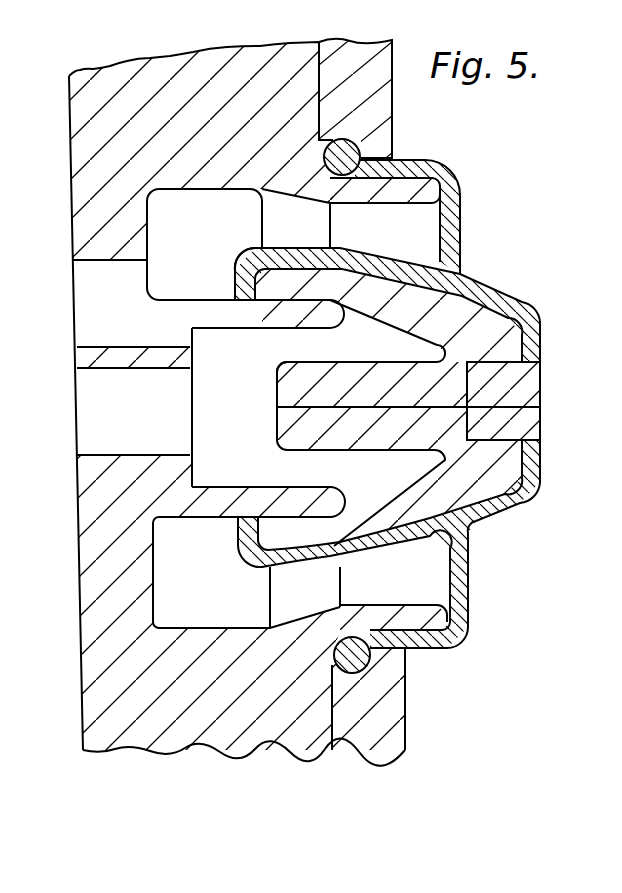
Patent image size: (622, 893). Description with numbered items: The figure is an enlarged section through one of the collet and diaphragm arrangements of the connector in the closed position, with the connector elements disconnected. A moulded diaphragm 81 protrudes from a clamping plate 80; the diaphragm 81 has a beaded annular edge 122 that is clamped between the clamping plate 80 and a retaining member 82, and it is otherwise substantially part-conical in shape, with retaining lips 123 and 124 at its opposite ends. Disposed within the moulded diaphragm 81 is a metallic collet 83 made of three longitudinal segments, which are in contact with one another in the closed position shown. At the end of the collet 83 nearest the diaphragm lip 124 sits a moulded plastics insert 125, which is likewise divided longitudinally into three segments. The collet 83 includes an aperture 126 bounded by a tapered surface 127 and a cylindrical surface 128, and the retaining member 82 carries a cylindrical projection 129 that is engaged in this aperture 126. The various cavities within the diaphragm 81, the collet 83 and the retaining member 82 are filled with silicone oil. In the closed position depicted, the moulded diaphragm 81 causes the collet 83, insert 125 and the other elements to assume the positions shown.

The clamping plate 80 is at (383, 121).
The moulded diaphragm 81 is at (527, 302).
The retaining member 82 is at (87, 175).
The three segment collet 83 is at (477, 318).
The beaded annular edge 122 is at (363, 157).
The retaining lip 123 is at (531, 328).
The retaining lip 124 is at (238, 280).
The moulded plastics insert 125 is at (531, 378).
The aperture 126 is at (272, 338).
The tapered surface 127 is at (388, 327).
The cylindrical surface 128 is at (290, 364).
The cylindrical projection 129 is at (249, 487).